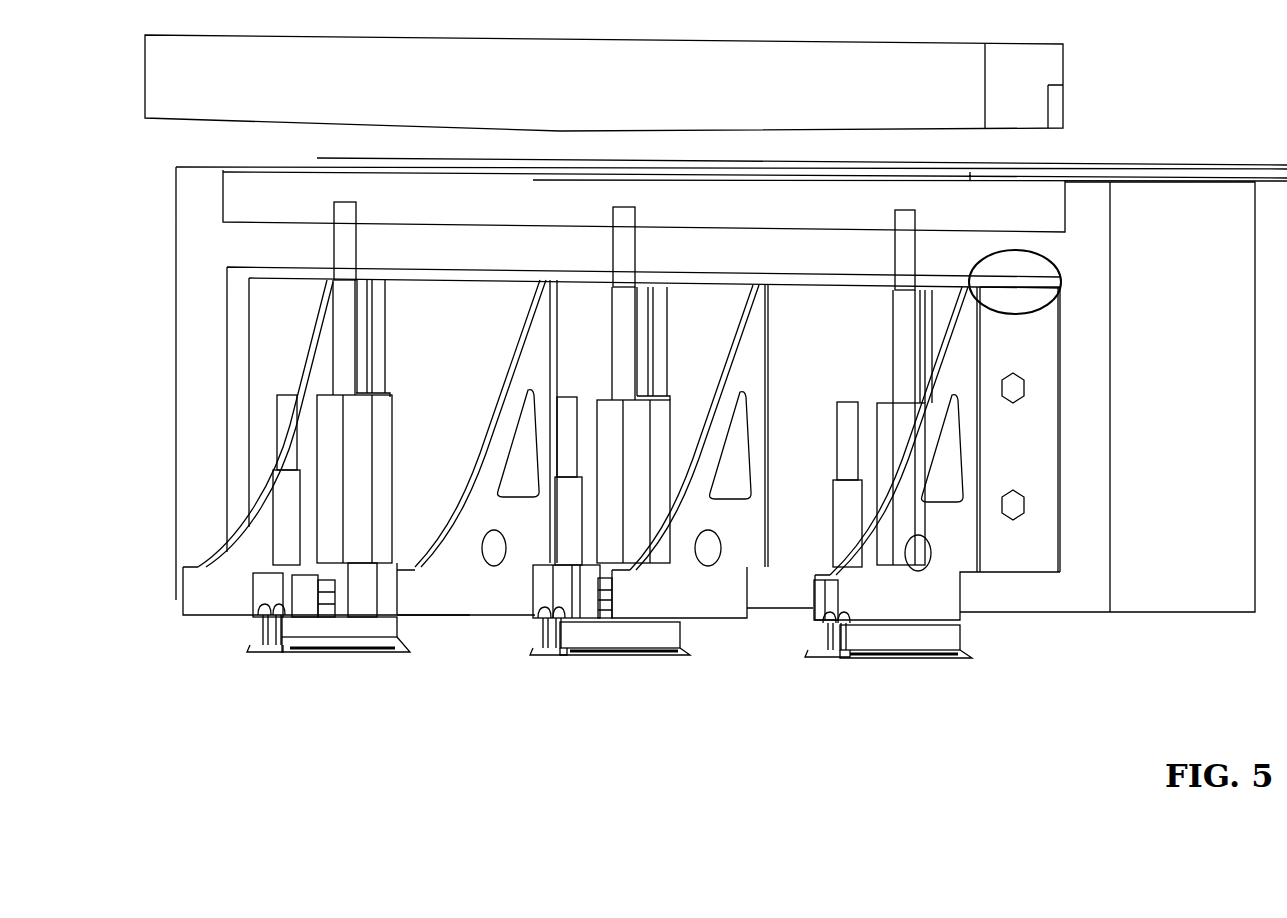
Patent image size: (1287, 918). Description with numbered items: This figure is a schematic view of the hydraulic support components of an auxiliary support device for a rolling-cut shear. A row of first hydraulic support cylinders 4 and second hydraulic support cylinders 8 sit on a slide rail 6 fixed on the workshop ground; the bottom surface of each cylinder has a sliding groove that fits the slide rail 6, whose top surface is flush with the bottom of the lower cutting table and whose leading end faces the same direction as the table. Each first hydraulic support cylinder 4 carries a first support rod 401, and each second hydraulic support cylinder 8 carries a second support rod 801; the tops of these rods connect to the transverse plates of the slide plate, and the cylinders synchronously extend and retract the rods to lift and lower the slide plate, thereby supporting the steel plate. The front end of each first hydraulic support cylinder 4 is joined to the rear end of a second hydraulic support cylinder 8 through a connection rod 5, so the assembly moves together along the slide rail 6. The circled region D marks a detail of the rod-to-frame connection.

The first support rod 401 is at (345, 272).
The first hydraulic support cylinder 4 is at (333, 417).
The second support rod 801 is at (292, 445).
The second hydraulic support cylinder 8 is at (283, 577).
The connection rod 5 is at (330, 587).
The slide rail 6 is at (597, 640).
The detail region D is at (1060, 282).